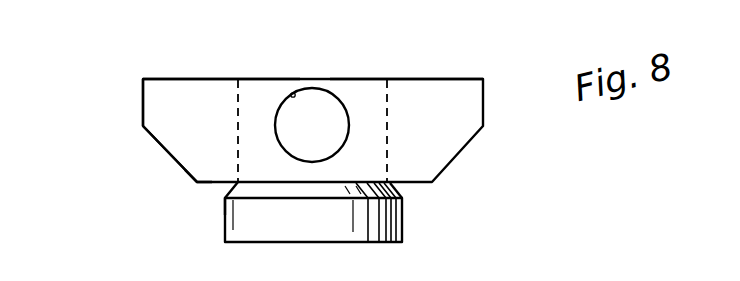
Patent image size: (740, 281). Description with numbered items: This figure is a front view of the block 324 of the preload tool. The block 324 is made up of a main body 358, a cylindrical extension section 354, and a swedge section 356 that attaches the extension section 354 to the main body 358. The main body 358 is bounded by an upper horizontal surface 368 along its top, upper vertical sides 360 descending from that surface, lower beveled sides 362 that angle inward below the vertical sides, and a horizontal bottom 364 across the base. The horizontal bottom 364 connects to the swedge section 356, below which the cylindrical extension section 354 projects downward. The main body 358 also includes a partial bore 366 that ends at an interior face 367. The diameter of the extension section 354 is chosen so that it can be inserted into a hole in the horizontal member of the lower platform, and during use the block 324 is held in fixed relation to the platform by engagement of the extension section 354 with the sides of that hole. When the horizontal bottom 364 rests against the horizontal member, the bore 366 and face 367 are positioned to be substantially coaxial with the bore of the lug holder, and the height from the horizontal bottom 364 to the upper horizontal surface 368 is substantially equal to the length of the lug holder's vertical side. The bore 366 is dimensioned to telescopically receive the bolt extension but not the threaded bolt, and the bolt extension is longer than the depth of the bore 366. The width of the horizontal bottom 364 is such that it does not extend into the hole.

The block 324 is at (489, 86).
The cylindrical extension section 354 is at (402, 225).
The swedge section 356 is at (226, 194).
The main body 358 is at (205, 83).
The upper vertical sides 360 is at (143, 98).
The lower beveled sides 362 is at (162, 152).
The horizontal bottom 364 is at (197, 185).
The partial bore 366 is at (290, 94).
The face 367 is at (322, 97).
The upper horizontal surface 368 is at (402, 77).